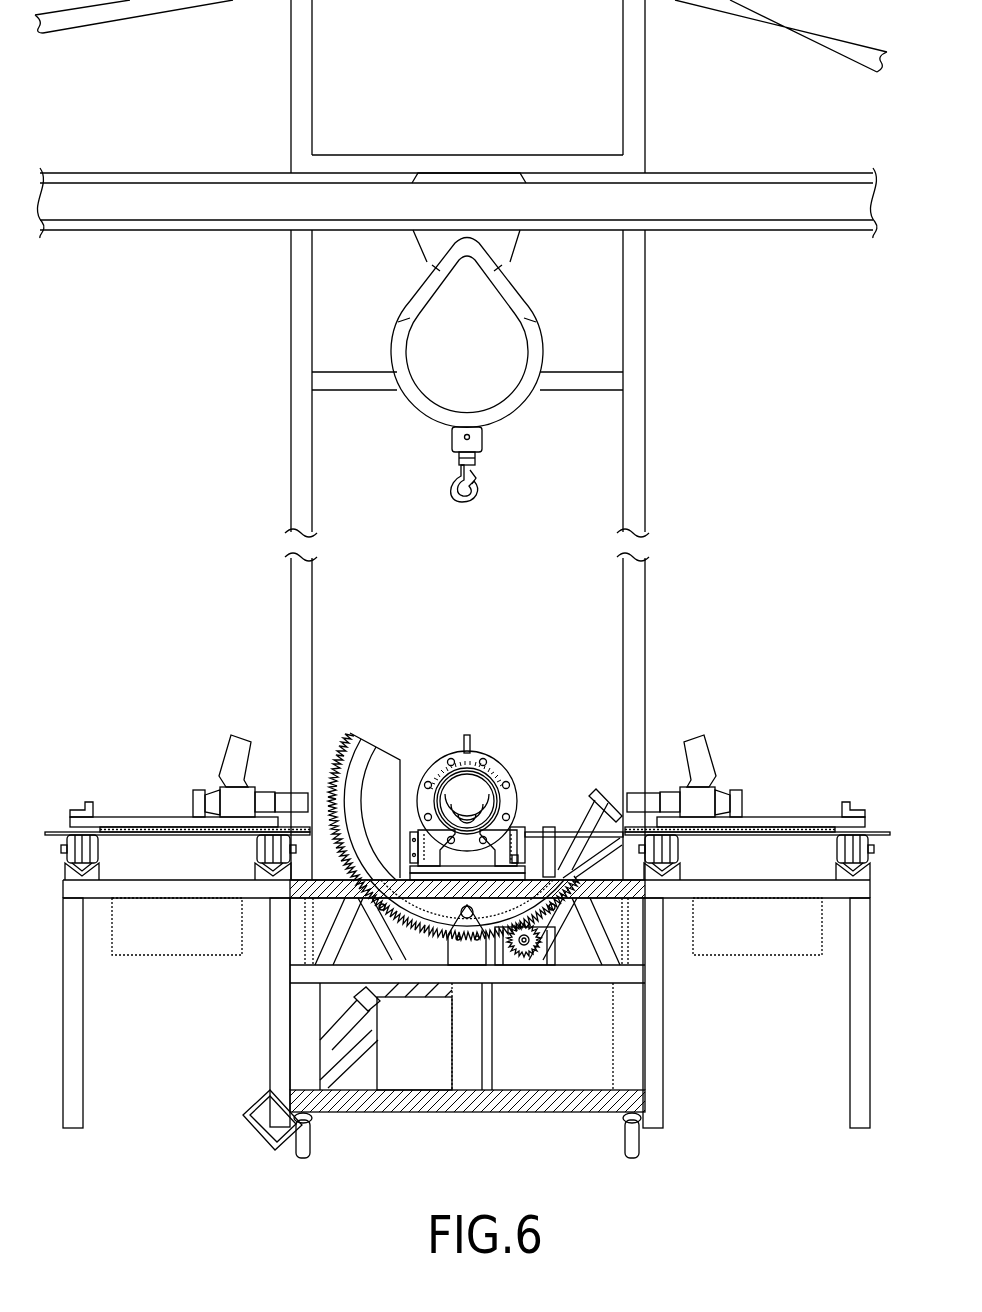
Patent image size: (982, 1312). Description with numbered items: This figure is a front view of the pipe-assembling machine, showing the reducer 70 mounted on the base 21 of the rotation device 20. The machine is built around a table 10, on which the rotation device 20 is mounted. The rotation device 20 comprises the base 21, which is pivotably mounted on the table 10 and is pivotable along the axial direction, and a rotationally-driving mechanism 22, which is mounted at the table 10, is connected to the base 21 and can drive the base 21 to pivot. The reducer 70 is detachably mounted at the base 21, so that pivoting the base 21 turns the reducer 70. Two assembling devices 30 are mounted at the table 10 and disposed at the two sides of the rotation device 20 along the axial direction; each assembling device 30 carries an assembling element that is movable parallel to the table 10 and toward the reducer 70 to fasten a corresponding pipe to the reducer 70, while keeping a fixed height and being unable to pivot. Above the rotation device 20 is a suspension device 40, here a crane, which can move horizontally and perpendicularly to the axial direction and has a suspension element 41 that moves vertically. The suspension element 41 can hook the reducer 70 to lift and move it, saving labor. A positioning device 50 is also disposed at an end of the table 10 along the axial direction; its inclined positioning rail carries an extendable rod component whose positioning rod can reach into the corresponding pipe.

The table 10 is at (602, 890).
The rotation device 20 is at (411, 856).
The base 21 is at (388, 760).
The rotationally-driving mechanism 22 is at (536, 977).
The assembling device 30 is at (152, 781).
The suspension device 40 is at (557, 391).
The suspension element 41 is at (463, 500).
The positioning device 50 is at (247, 1081).
The reducer 70 is at (478, 752).